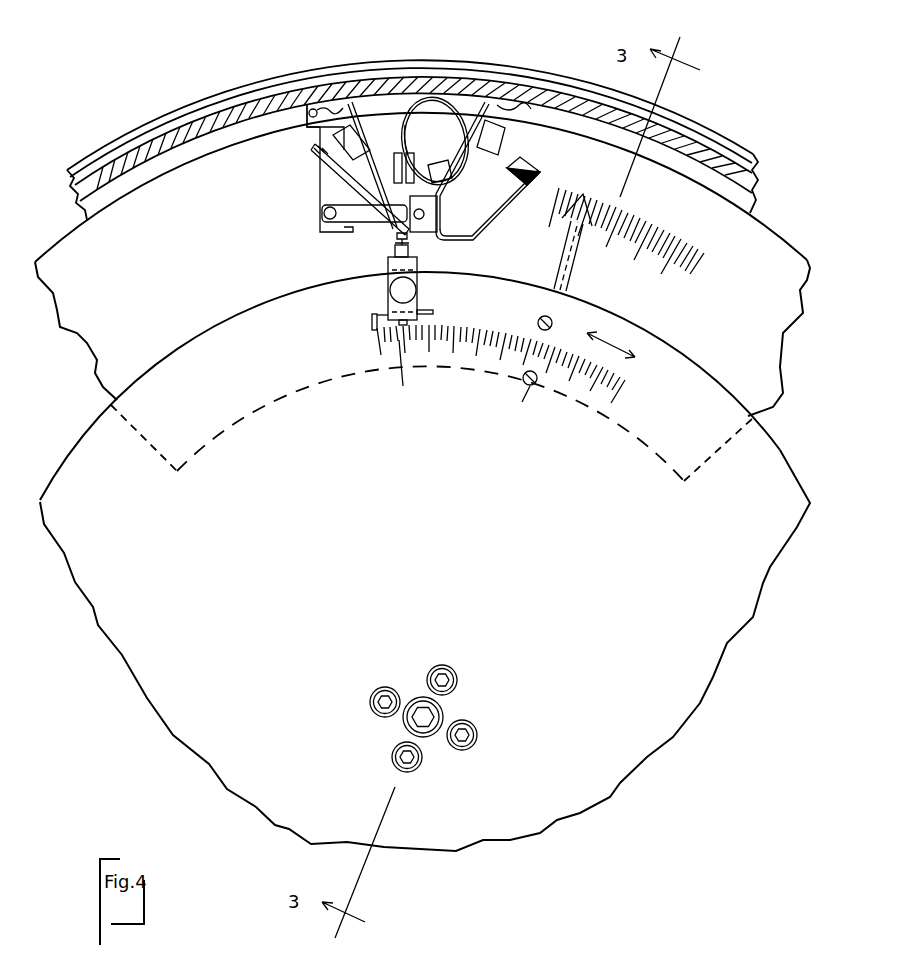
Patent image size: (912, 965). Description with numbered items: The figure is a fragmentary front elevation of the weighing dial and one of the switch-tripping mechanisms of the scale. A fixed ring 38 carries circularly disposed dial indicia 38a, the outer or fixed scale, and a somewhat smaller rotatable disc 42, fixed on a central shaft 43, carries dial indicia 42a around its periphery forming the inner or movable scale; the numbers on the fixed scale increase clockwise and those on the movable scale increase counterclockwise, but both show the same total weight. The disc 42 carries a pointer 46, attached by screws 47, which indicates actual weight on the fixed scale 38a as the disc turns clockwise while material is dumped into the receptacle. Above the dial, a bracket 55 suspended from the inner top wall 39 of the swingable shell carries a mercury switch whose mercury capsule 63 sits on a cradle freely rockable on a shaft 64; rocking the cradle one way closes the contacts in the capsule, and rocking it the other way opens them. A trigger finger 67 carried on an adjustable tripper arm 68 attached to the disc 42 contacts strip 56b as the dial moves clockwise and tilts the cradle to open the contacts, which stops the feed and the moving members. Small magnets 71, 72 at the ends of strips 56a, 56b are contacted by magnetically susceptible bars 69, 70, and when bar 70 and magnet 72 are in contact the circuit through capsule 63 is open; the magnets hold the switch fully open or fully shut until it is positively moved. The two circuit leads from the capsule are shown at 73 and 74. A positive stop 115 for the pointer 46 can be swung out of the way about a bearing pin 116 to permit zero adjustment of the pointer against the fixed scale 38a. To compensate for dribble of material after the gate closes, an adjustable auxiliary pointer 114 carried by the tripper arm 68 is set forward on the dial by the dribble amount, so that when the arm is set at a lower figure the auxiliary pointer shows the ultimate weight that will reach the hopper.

The inner top wall 39 is at (752, 152).
The ring 38 is at (422, 306).
The dial indicia 38a is at (700, 262).
The rotatable disc 42 is at (425, 608).
The dial indicia 42a is at (626, 392).
The central shaft 43 is at (437, 708).
The pointer 46 is at (566, 268).
The screws 47 is at (543, 408).
The bracket 55 is at (530, 112).
The strip 56a is at (320, 185).
The strip 56b is at (487, 228).
The mercury capsule 63 is at (443, 165).
The shaft 64 is at (427, 213).
The trigger finger 67 is at (395, 237).
The adjustable tripper arm 68 is at (417, 254).
The magnetically susceptible bar 69 is at (320, 147).
The magnetically susceptible bar 70 is at (505, 138).
The magnet 71 is at (337, 152).
The magnet 72 is at (540, 168).
The circuit lead 73 is at (407, 135).
The circuit lead 74 is at (470, 100).
The adjustable auxiliary pointer 114 is at (372, 317).
The positive stop 115 is at (370, 214).
The bearing pin 116 is at (320, 220).